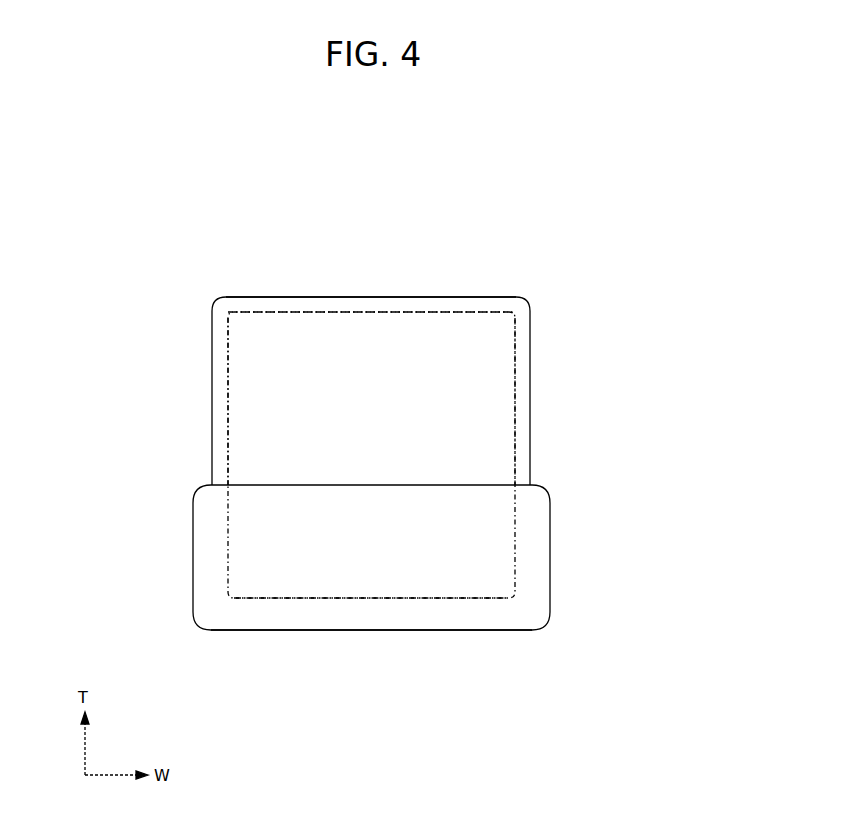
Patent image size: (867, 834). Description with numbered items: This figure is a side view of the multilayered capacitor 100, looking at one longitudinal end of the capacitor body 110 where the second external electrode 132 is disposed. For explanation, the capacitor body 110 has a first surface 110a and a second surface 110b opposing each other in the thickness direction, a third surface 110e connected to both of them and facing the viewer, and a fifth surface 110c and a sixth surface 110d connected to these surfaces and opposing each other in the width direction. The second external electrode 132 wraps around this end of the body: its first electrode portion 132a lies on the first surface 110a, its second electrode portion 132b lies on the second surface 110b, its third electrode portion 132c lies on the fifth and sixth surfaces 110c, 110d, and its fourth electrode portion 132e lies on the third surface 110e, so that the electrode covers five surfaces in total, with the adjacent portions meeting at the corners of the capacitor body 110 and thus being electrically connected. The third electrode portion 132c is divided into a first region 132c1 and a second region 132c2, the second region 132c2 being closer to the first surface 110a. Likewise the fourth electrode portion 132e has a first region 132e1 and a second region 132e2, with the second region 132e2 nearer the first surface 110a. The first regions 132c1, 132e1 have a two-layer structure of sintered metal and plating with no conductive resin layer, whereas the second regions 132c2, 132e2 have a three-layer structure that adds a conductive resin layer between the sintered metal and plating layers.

The multilayered capacitor 100 is at (530, 282).
The capacitor body 110 is at (525, 308).
The first surface 110a is at (335, 598).
The second surface 110b is at (278, 312).
The fifth surface 110c is at (228, 398).
The sixth surface 110d is at (515, 398).
The third surface 110e is at (404, 575).
The second external electrode 132 is at (198, 638).
The first electrode portion 132a is at (457, 630).
The second electrode portion 132b is at (470, 297).
The third electrode portion 132c is at (105, 445).
The first region 132c1 is at (212, 452).
The second region 132c2 is at (193, 538).
The fourth electrode portion 132e is at (418, 230).
The first region 132e1 is at (318, 535).
The second region 132e2 is at (398, 380).